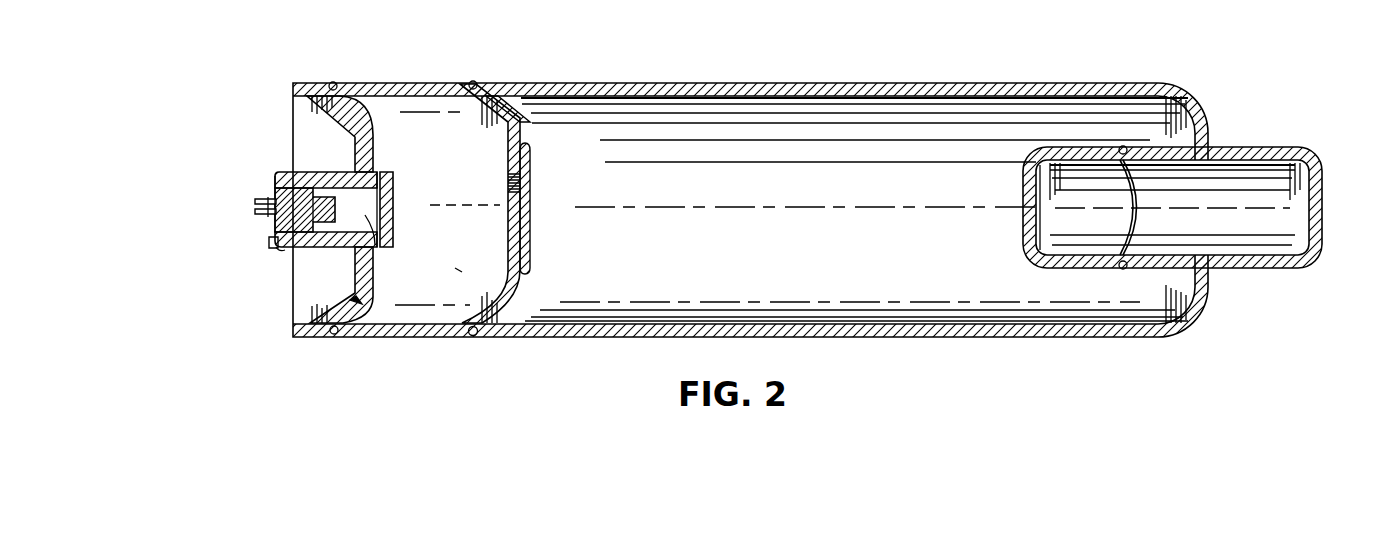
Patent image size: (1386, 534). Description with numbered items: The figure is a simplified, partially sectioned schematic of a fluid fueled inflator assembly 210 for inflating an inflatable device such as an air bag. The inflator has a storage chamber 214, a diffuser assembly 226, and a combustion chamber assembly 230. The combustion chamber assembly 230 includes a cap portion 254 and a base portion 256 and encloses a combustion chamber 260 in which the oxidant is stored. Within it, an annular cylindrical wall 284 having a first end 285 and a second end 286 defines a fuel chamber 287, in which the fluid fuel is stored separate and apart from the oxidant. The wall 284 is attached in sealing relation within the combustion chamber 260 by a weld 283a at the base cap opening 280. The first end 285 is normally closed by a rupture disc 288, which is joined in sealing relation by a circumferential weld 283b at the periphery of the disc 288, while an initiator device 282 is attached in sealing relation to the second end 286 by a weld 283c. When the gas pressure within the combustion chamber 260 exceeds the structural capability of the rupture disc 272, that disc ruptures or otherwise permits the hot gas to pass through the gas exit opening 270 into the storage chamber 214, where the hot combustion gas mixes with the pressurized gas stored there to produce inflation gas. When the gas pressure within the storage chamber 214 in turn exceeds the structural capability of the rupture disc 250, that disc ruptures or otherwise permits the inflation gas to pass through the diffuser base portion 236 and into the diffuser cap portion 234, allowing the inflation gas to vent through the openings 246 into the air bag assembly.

The fluid fueled inflator assembly 210 is at (750, 168).
The storage chamber 214 is at (637, 118).
The diffuser assembly 226 is at (1303, 147).
The combustion chamber assembly 230 is at (403, 84).
The diffuser cap portion 234 is at (1288, 266).
The diffuser base portion 236 is at (1023, 208).
The openings 246 is at (1243, 147).
The rupture disc 250 is at (1147, 202).
The combustion chamber assembly cap portion 254 is at (455, 333).
The combustion chamber assembly base portion 256 is at (360, 305).
The combustion chamber 260 is at (457, 272).
The gas exit opening 270 is at (506, 190).
The rupture disc 272 is at (530, 190).
The base cap opening 280 is at (366, 138).
The initiator device 282 is at (287, 210).
The weld 283a is at (353, 172).
The circumferential weld 283b is at (388, 240).
The weld 283c is at (270, 246).
The annular cylindrical wall 284 is at (277, 171).
The first end 285 is at (441, 151).
The second end 286 is at (281, 251).
The fuel chamber 287 is at (376, 216).
The rupture disc 288 is at (394, 184).